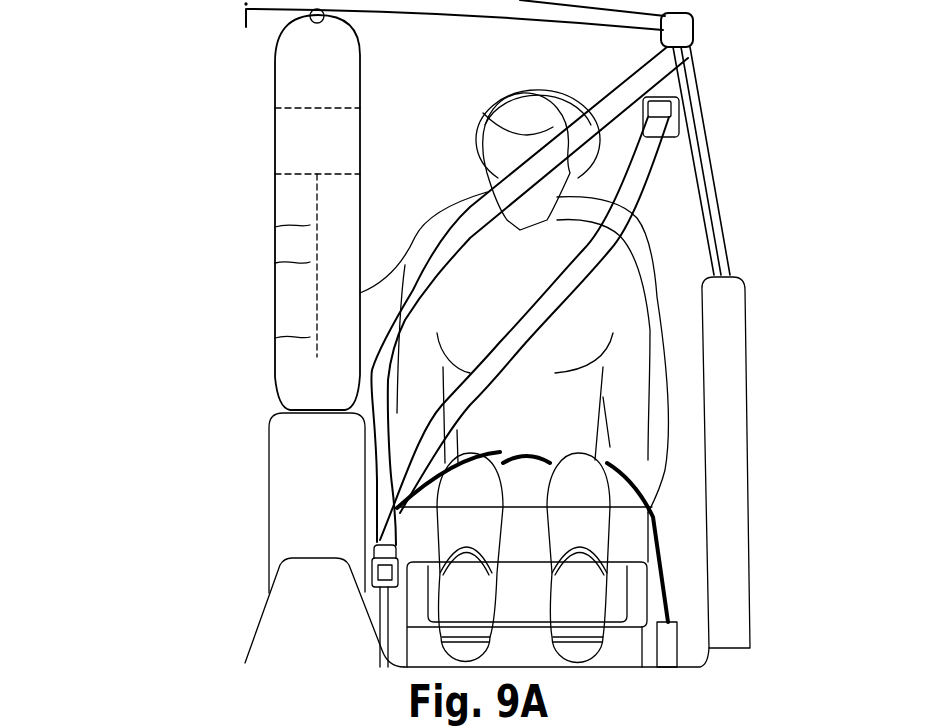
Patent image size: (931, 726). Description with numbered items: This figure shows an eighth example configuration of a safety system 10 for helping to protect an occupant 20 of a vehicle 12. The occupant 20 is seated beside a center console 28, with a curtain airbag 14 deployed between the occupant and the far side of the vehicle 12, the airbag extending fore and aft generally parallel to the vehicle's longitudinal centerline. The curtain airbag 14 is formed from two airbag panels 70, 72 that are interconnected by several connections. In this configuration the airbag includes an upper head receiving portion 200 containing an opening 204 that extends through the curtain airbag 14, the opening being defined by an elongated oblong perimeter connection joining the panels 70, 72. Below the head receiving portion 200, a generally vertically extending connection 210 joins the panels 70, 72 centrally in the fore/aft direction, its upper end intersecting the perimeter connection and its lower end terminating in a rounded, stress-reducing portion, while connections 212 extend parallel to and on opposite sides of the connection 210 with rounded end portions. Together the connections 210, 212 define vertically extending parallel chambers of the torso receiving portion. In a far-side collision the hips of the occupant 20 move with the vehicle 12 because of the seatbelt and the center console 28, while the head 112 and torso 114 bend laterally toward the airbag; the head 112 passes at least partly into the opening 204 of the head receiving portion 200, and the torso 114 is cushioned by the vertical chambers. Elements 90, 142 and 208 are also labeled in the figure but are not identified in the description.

The safety system 10 is at (183, 19).
The vehicle 12 is at (715, 38).
The curtain airbag 14 is at (275, 263).
The occupant 20 is at (724, 241).
The center console 28 is at (305, 462).
The airbag panel 70 is at (360, 237).
The airbag panel 72 is at (275, 227).
The occupant head 90 is at (542, 157).
The head 112 is at (505, 116).
The torso 114 is at (615, 318).
The airbag lower chamber 142 is at (275, 338).
The head receiving portion 200 is at (372, 138).
The opening 204 is at (270, 127).
The tether 208 is at (317, 174).
The vertically extending connection 210 is at (211, 265).
The connections 212 is at (317, 292).